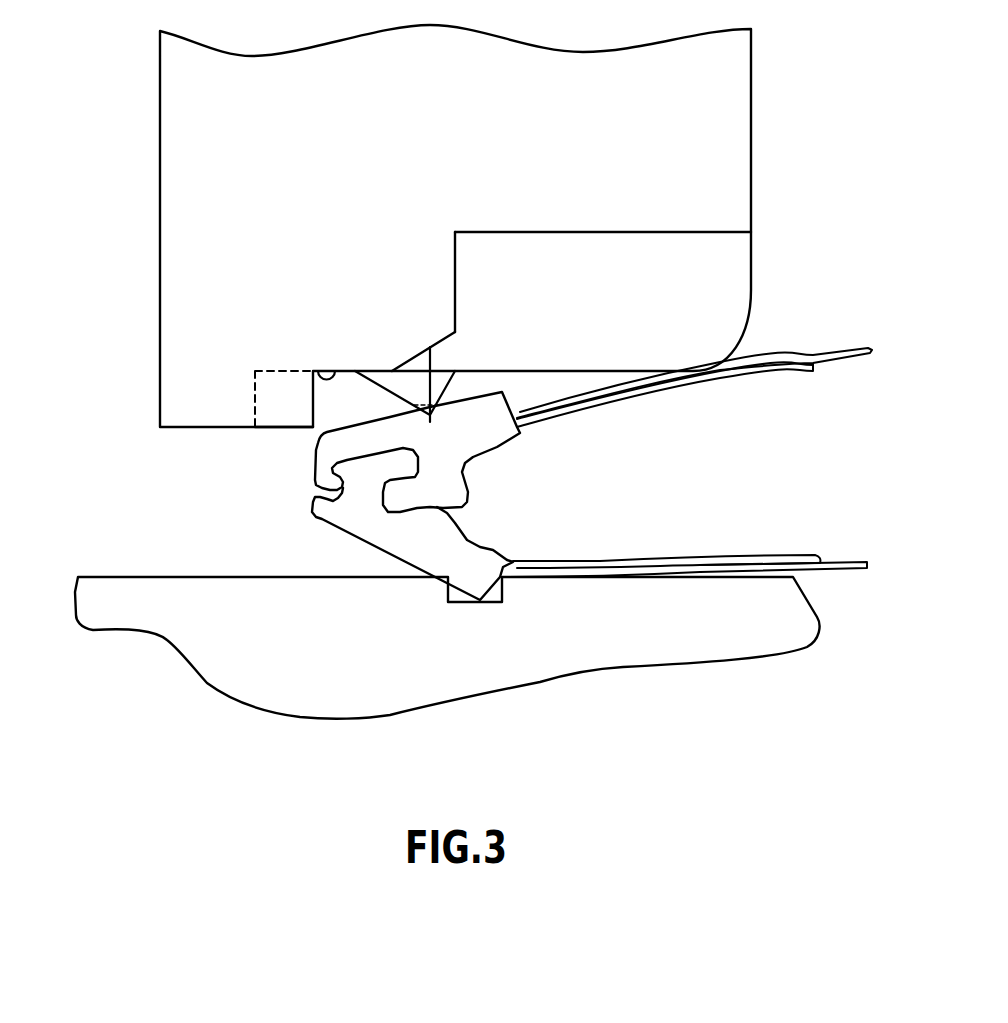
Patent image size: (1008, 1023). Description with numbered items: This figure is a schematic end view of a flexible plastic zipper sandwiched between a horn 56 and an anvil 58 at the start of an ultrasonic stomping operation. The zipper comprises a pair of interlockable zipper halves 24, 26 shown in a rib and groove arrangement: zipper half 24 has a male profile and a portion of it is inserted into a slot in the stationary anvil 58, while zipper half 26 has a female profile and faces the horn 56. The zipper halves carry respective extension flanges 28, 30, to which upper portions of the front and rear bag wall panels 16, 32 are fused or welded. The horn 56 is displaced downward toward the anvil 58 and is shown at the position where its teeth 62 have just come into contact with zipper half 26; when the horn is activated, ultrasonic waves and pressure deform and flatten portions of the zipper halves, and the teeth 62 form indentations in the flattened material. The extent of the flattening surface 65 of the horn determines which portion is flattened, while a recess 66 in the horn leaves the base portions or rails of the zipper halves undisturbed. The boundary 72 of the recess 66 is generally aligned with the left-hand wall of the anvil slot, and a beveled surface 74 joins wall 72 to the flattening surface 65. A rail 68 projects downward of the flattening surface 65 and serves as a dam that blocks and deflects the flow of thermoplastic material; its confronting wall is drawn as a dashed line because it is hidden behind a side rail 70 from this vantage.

The front bag wall panel 16 is at (851, 568).
The zipper half 24 is at (357, 535).
The zipper half 26 is at (316, 460).
The extension flange 28 is at (617, 558).
The extension flange 30 is at (783, 377).
The rear bag wall panel 32 is at (853, 350).
The horn 56 is at (751, 132).
The anvil 58 is at (76, 596).
The teeth 62 is at (388, 396).
The flattening surface 65 is at (323, 368).
The recess 66 is at (665, 296).
The rail 68 is at (258, 404).
The side rail 70 is at (279, 428).
The boundary 72 is at (456, 285).
The beveled surface 74 is at (446, 337).